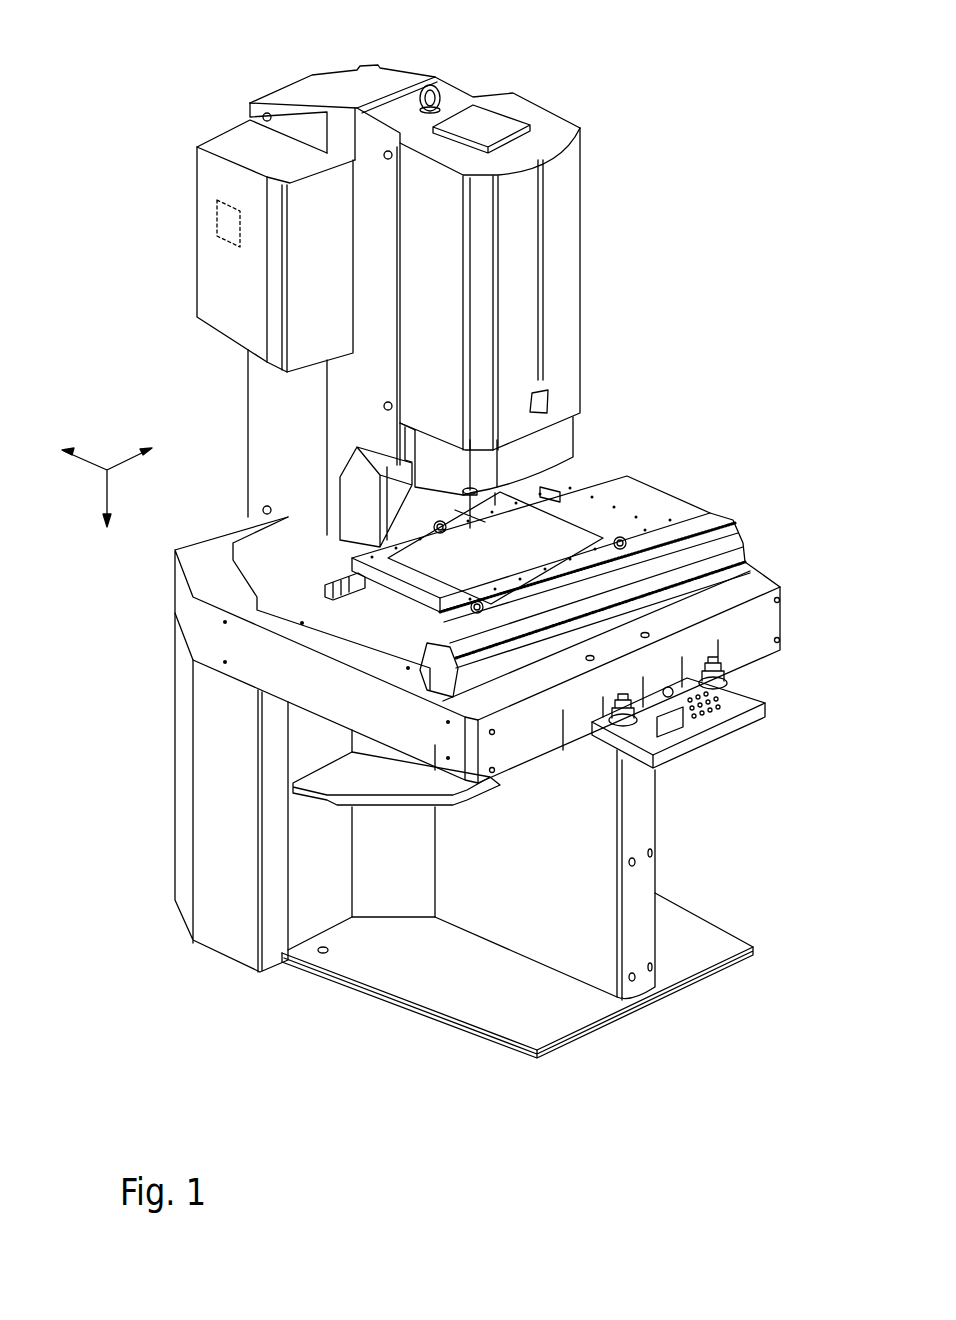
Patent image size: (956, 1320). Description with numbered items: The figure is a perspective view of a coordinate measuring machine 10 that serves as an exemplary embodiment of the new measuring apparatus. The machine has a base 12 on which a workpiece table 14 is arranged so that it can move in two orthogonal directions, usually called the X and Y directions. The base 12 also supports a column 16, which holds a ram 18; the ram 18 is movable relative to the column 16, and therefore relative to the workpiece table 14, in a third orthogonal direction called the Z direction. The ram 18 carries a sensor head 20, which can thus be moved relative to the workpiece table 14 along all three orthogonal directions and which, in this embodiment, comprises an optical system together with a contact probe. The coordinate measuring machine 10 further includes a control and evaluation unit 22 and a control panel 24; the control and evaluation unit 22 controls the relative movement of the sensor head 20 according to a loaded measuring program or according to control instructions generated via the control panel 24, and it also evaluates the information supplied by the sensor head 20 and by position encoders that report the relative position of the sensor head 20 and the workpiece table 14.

The coordinate measuring machine 10 is at (740, 83).
The base 12 is at (647, 877).
The workpiece table 14 is at (580, 523).
The column 16 is at (393, 78).
The ram 18 is at (565, 435).
The sensor head 20 is at (505, 494).
The control and evaluation unit 22 is at (213, 273).
The control panel 24 is at (750, 698).